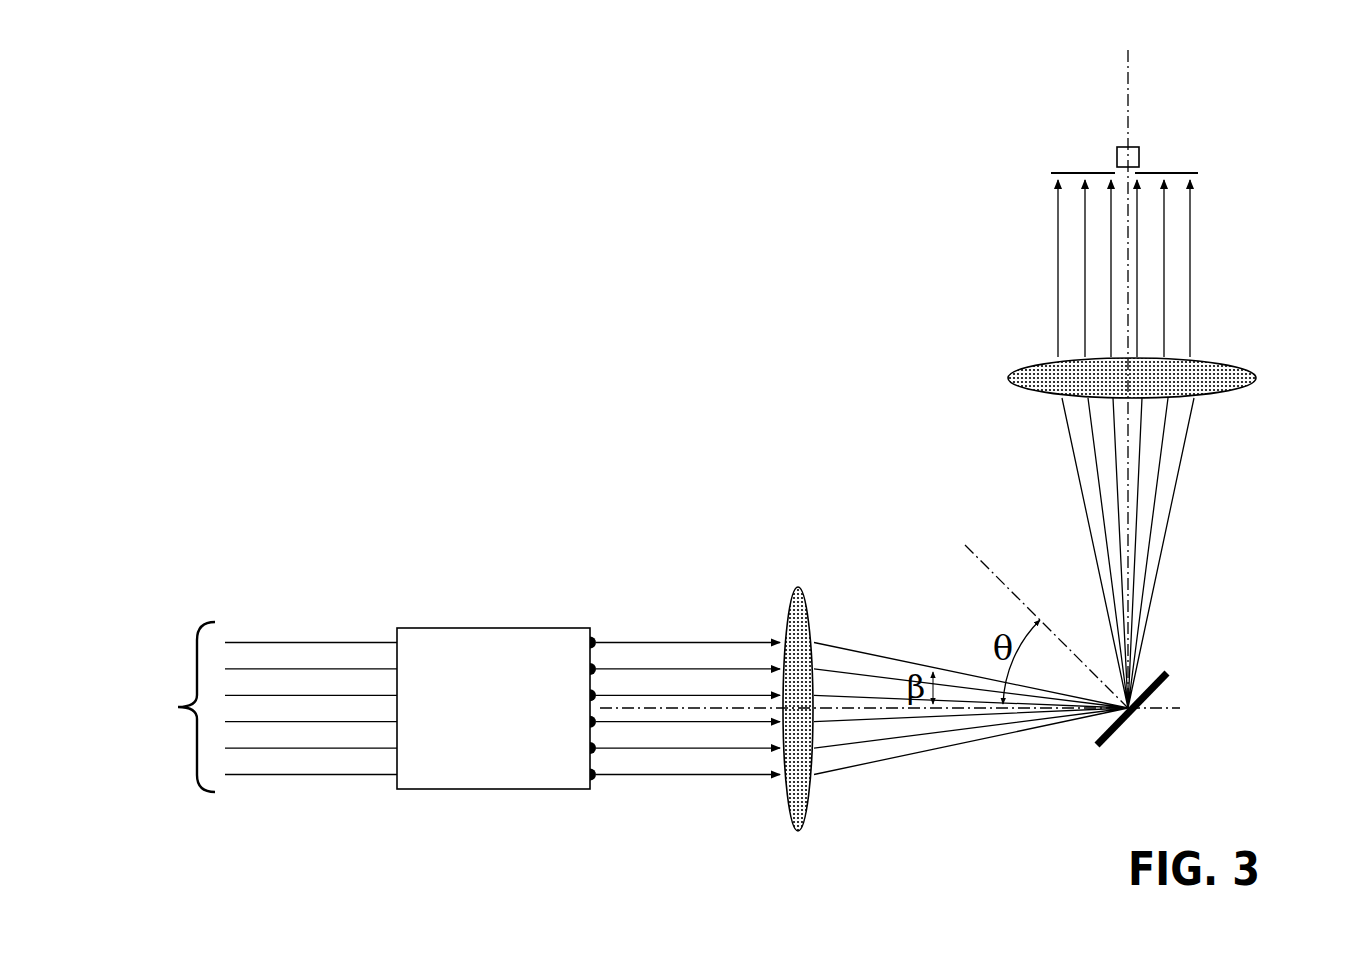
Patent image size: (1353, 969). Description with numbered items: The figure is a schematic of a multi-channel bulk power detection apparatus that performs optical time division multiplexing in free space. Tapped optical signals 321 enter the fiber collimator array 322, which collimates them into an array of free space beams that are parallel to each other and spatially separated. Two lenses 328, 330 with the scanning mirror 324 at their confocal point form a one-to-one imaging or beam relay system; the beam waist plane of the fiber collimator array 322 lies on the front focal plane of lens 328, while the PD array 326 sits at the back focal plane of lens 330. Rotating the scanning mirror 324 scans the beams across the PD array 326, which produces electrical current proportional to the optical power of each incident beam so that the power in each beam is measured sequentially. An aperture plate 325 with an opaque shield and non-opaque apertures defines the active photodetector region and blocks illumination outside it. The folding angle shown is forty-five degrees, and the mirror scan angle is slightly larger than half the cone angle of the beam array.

The tapped optical signals 321 is at (266, 707).
The fiber collimator array 322 is at (497, 790).
The scanning mirror 324 is at (1174, 681).
The aperture plate 325 is at (1075, 172).
The PD array 326 is at (1144, 160).
The lens 328 is at (800, 587).
The lens 330 is at (1257, 378).